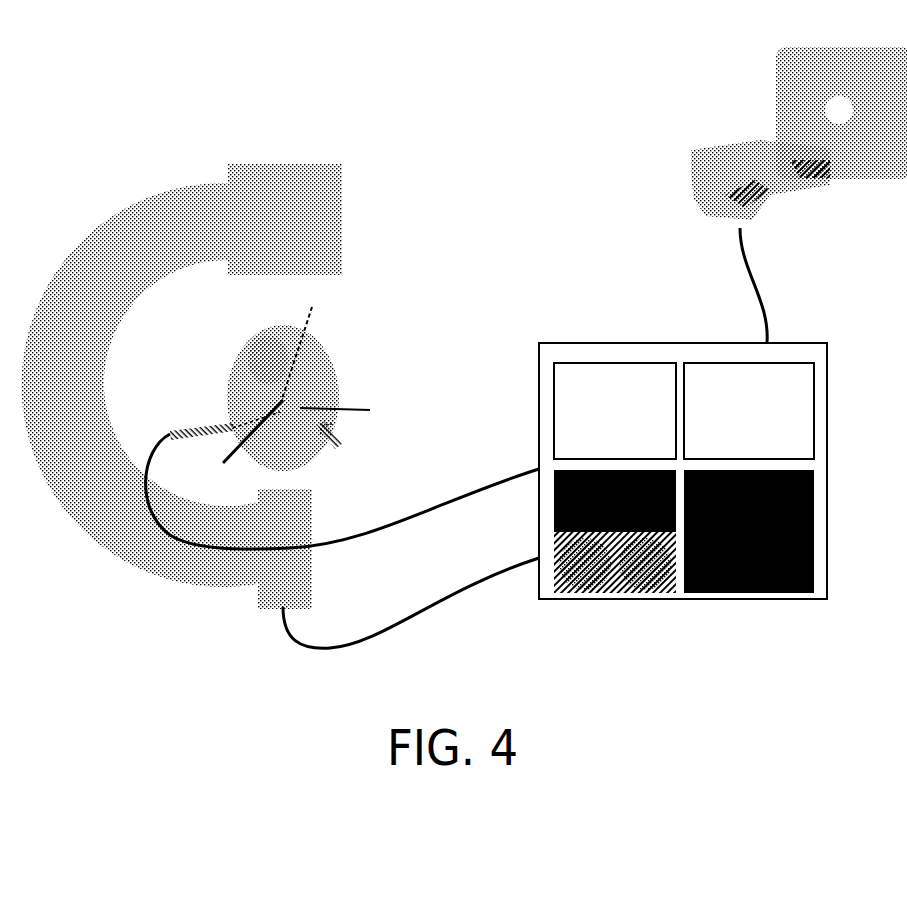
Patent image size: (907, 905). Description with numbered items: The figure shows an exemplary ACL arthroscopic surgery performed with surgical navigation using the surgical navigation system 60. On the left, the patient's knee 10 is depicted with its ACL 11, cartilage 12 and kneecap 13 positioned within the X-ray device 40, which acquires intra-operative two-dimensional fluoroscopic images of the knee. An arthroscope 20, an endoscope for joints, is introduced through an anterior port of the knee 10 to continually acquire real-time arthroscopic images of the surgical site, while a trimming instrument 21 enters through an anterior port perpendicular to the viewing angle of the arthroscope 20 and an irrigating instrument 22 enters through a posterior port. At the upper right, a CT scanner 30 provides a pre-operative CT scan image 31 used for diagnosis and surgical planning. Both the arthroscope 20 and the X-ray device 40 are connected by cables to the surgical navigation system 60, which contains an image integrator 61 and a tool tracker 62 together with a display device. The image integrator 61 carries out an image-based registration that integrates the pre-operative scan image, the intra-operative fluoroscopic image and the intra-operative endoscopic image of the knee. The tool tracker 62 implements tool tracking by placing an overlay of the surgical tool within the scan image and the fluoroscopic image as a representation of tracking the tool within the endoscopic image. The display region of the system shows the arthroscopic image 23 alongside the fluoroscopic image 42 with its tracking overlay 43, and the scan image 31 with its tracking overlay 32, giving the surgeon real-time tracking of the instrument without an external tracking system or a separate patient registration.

The knee 10 is at (233, 372).
The ACL 11 is at (351, 411).
The cartilage 12 is at (238, 443).
The kneecap 13 is at (256, 343).
The arthroscope 20 is at (172, 432).
The trimming instrument 21 is at (345, 437).
The irrigating instrument 22 is at (308, 308).
The arthroscopic image 23 is at (558, 507).
The CT scanner 30 is at (695, 157).
The CT scan image 31 is at (805, 559).
The tracking overlay 32 is at (708, 574).
The X-ray device 40 is at (133, 200).
The fluoroscopic image 42 is at (582, 600).
The tracking overlay 43 is at (650, 600).
The surgical navigation system 60 is at (600, 342).
The image integrator 61 is at (554, 410).
The tool tracker 62 is at (814, 410).